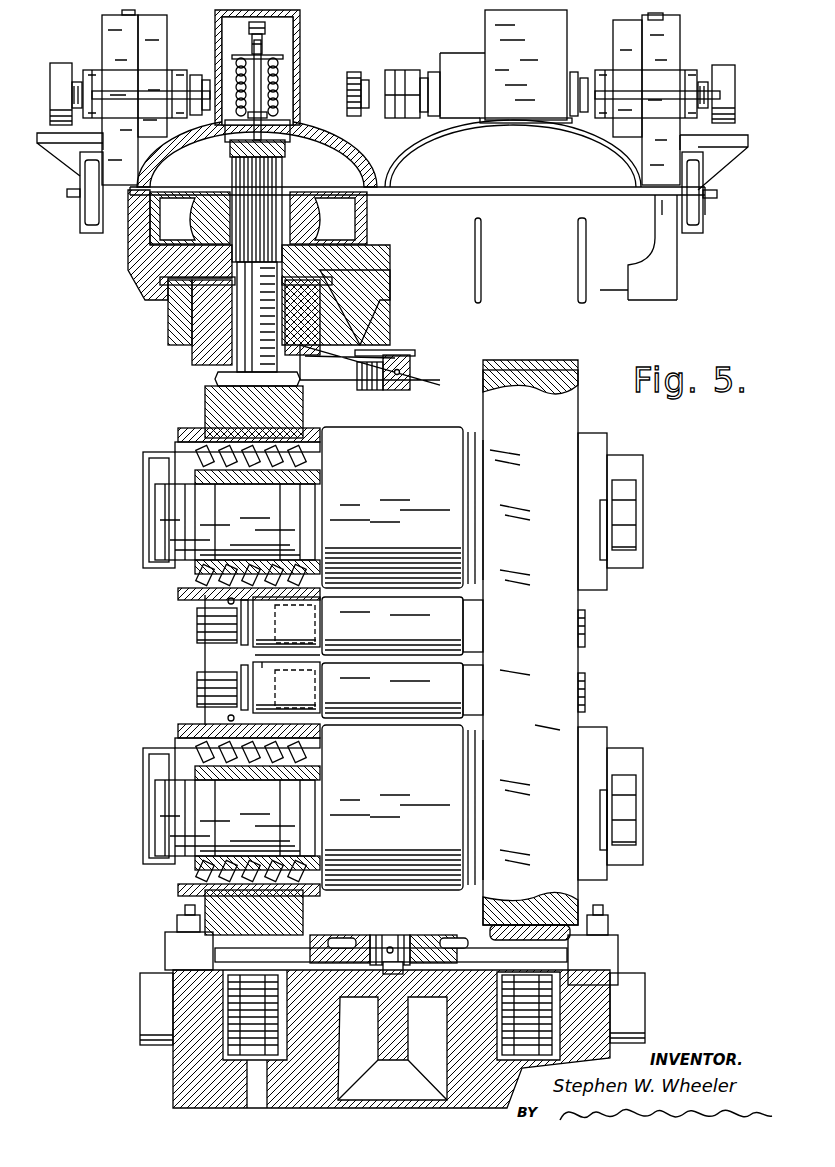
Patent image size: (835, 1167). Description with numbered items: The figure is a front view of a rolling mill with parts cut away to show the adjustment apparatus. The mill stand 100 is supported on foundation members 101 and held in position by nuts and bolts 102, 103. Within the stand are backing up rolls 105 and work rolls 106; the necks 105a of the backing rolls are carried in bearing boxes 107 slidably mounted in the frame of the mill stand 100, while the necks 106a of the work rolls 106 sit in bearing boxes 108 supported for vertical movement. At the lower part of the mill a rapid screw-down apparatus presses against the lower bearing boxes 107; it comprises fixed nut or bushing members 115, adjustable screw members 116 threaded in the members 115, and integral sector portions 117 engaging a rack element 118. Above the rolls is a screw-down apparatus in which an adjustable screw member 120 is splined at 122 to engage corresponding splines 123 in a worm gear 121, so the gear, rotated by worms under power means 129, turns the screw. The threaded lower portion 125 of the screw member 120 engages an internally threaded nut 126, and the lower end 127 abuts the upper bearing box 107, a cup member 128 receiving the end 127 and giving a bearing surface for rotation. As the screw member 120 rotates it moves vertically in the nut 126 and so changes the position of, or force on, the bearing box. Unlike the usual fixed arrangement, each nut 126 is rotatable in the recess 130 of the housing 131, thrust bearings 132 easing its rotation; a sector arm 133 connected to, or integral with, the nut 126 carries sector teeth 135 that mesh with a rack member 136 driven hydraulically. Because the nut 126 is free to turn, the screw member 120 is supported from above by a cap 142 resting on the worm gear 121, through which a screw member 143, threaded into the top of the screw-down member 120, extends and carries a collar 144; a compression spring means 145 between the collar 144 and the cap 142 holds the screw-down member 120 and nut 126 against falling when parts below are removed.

The mill stand 100 is at (583, 717).
The foundation members 101 is at (140, 1012).
The nuts 102 is at (178, 922).
The bolts 103 is at (186, 905).
The backing up rolls 105 is at (407, 499).
The necks of the backing rolls 105a is at (250, 514).
The work rolls 106 is at (409, 629).
The necks of work rolls 106a is at (298, 629).
The bearing boxes 107 is at (183, 436).
The bearing boxes 108 is at (262, 666).
The fixed nut or bushing members 115 is at (200, 968).
The adjustable screw members 116 is at (223, 1043).
The sector portions 117 is at (322, 945).
The rack element 118 is at (393, 940).
The adjustable screw member or bolt 120 is at (235, 336).
The worm gear 121 is at (137, 233).
The splines 122 is at (405, 219).
The splines 123 is at (200, 222).
The lower portion 125 is at (195, 312).
The nut or bushing 126 is at (215, 327).
The lower end 127 is at (232, 380).
The cup member 128 is at (215, 389).
The power means 129 is at (308, 83).
The recess 130 is at (175, 296).
The housing 131 is at (402, 278).
The thrust bearings 132 is at (175, 281).
The sector arm 133 is at (320, 378).
The sector teeth 135 is at (366, 392).
The rack member 136 is at (384, 393).
The cap 142 is at (283, 117).
The screw member 143 is at (285, 107).
The washer or collar member 144 is at (247, 45).
The compression spring means 145 is at (238, 72).